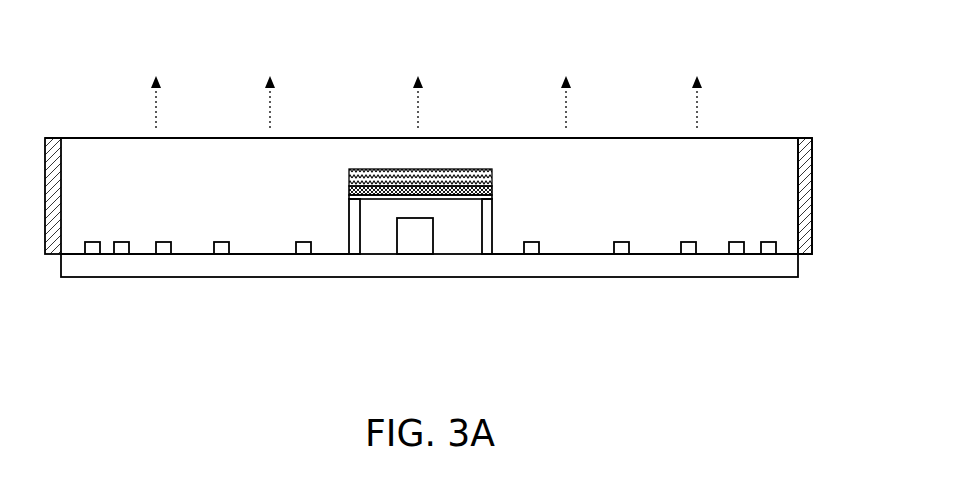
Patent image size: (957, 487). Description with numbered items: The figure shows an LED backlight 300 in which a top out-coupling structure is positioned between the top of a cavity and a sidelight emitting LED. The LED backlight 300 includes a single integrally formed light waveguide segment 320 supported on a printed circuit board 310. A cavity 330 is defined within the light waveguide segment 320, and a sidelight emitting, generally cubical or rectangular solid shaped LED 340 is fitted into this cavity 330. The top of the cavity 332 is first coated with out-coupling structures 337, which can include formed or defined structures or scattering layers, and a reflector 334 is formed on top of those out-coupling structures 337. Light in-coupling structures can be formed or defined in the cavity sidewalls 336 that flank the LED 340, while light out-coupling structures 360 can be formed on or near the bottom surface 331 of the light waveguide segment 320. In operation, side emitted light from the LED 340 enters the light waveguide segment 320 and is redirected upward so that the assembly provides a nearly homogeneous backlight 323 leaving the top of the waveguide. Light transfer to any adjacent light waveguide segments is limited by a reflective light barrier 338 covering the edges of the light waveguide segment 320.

The LED backlight 300 is at (117, 74).
The printed circuit board 310 is at (638, 277).
The light waveguide segment 320 is at (732, 138).
The homogeneous backlight 323 is at (422, 98).
The cavity 330 is at (450, 232).
The bottom surface 331 is at (137, 253).
The top of the cavity 332 is at (349, 172).
The reflector 334 is at (391, 199).
The cavity sidewalls 336 is at (492, 214).
The out-coupling structures 337 is at (468, 170).
The reflective light barrier 338 is at (798, 182).
The LED 340 is at (410, 236).
The light out-coupling structures 360 is at (178, 246).